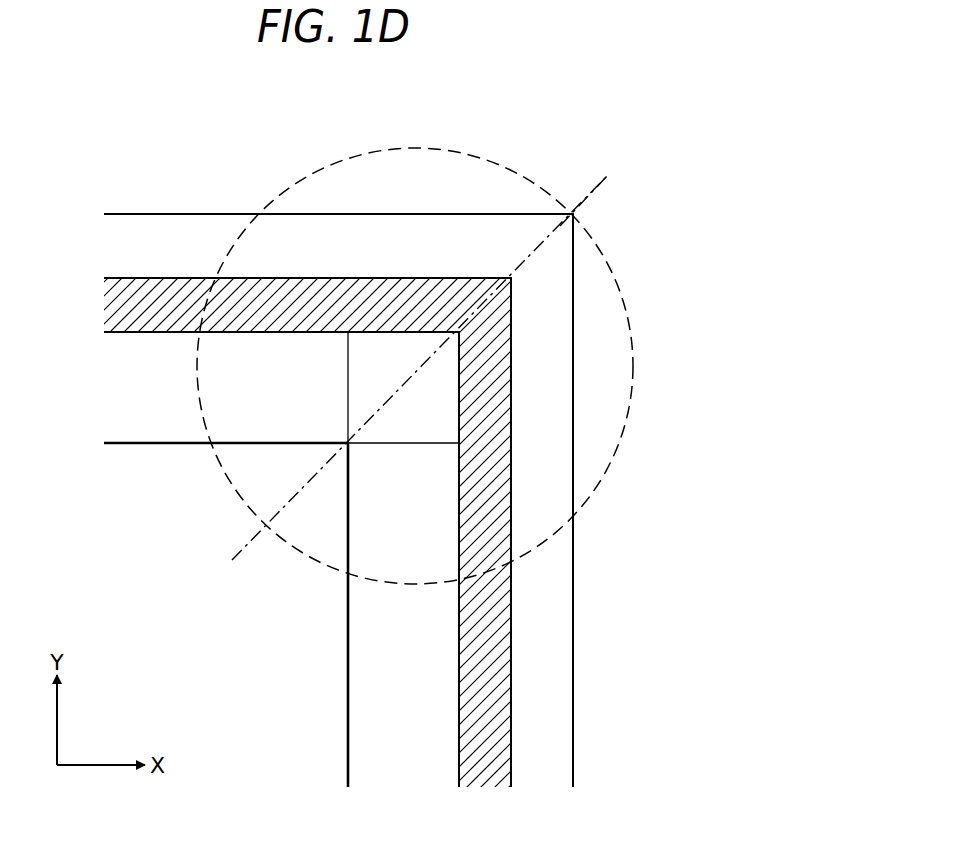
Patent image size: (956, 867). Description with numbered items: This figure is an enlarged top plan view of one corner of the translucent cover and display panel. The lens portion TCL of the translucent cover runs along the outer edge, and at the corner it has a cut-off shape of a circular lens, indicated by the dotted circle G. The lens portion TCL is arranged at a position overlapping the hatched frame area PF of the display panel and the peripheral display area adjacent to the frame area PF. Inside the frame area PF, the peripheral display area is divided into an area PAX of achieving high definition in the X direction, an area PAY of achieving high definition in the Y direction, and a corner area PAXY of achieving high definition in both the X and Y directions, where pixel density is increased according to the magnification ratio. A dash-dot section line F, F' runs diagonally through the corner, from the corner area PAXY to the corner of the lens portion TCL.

The lens portion TCL is at (565, 738).
The frame area PF is at (484, 773).
The area of achieving high definition in the X direction PAX is at (358, 739).
The area of achieving high definition in the Y direction PAY is at (266, 426).
The area of achieving high definition in the X and Y directions PAXY is at (408, 430).
The enlarged region circle G is at (487, 161).
The section line F end F is at (408, 382).
The section line F' end F' is at (595, 193).